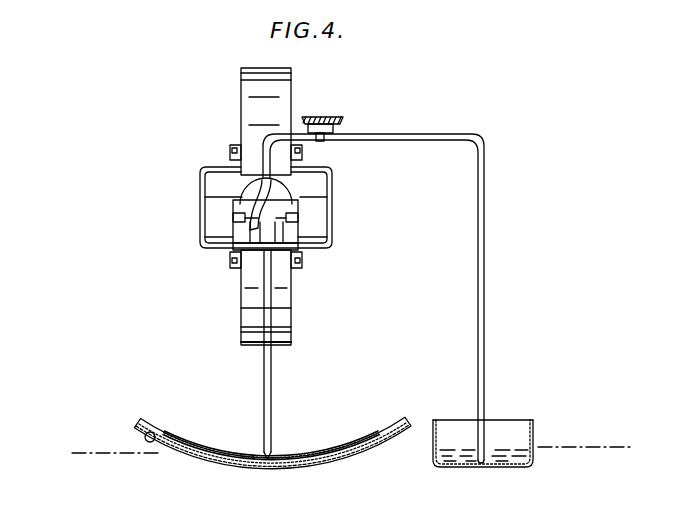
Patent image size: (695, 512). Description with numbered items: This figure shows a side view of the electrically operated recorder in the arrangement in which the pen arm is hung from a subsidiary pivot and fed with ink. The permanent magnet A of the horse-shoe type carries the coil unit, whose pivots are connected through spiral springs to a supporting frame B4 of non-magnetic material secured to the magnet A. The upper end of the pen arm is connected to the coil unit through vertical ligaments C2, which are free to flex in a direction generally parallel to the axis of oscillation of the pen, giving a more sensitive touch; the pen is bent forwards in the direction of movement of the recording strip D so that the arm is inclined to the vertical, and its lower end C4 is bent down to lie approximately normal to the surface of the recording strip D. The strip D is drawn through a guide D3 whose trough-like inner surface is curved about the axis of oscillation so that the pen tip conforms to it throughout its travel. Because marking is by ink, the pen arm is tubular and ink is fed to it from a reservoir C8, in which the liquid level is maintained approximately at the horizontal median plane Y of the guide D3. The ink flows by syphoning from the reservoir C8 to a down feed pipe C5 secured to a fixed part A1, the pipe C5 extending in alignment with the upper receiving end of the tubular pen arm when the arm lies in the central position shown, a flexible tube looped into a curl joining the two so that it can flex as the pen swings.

The permanent magnet A is at (273, 107).
The fixed part A1 is at (323, 115).
The down feed pipe C5 is at (262, 150).
The supporting frame B4 is at (330, 170).
The vertical ligaments C2 is at (342, 206).
The lower end of the pen C4 is at (272, 422).
The recording strip D is at (305, 453).
The guide D3 is at (292, 467).
The reservoir C8 is at (434, 432).
The horizontal median plane Y is at (352, 452).